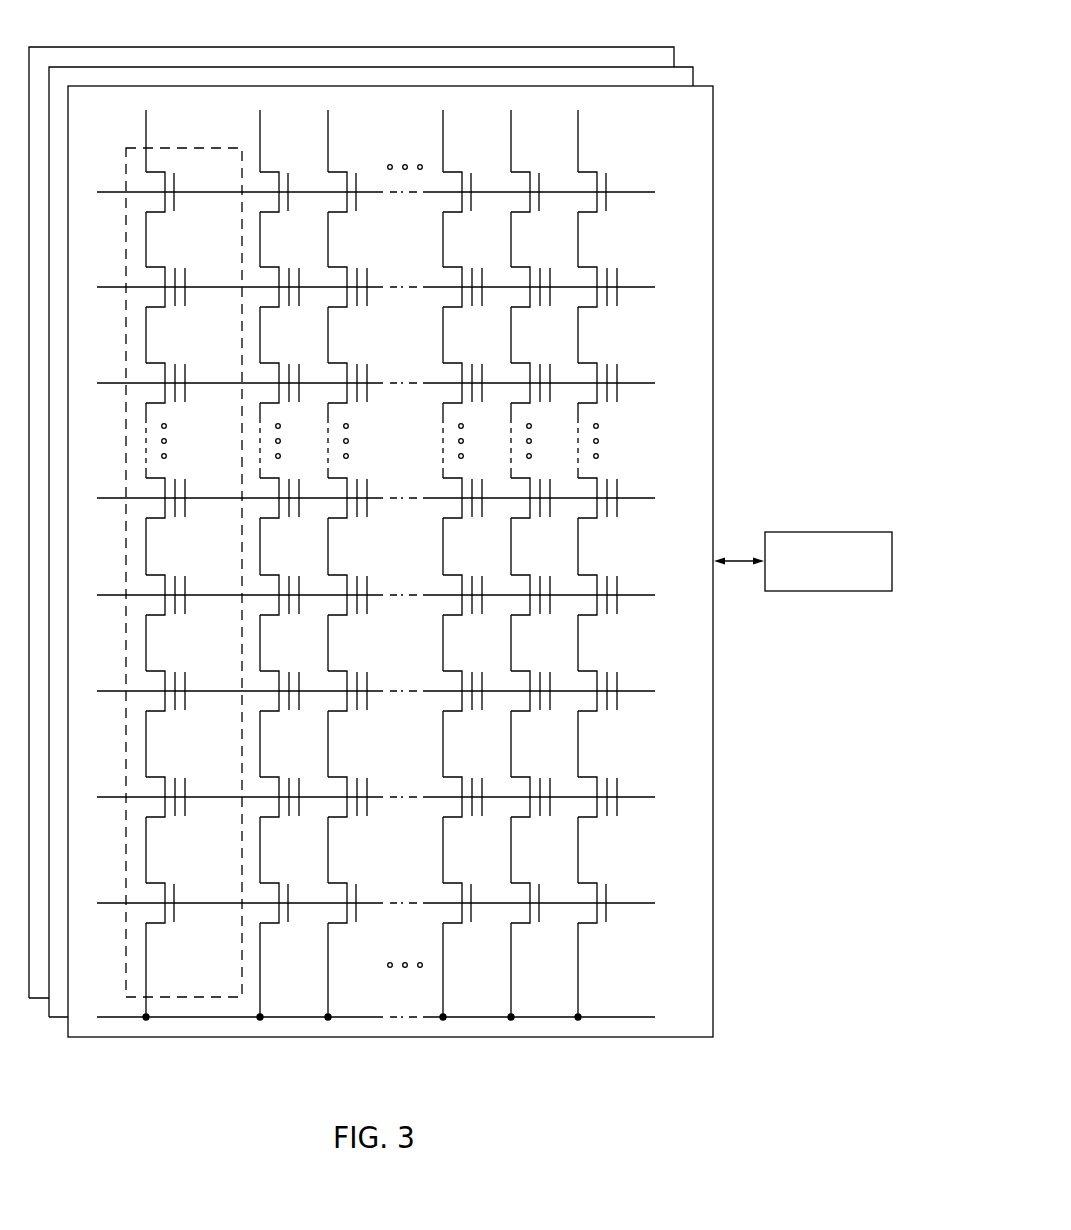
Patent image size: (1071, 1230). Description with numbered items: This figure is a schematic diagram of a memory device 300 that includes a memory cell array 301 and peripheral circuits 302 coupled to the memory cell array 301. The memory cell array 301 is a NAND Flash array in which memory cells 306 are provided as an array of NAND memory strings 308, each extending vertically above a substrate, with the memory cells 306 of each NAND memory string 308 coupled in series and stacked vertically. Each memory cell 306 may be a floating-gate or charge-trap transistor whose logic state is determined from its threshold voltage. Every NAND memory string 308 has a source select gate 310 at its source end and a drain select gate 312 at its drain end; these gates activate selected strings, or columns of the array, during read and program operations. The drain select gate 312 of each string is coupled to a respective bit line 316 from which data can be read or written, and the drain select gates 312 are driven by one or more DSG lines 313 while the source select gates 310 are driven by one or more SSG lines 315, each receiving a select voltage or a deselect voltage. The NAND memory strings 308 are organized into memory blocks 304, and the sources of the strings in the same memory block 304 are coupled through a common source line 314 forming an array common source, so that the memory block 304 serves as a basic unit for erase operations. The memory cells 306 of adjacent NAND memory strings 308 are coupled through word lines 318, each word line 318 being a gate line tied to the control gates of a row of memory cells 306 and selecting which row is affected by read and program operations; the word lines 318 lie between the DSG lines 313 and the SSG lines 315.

The memory device 300 is at (488, 521).
The memory cell array 301 is at (432, 561).
The peripheral circuits 302 is at (892, 562).
The memory block 304 is at (306, 82).
The memory cell 306 is at (187, 351).
The NAND memory string 308 is at (199, 145).
The source select gate 310 is at (178, 935).
The drain select gate 312 is at (178, 218).
The DSG line 313 is at (630, 191).
The source line 314 is at (305, 1015).
The SSG line 315 is at (630, 905).
The bit line 316 is at (145, 128).
The word line 318 is at (375, 694).